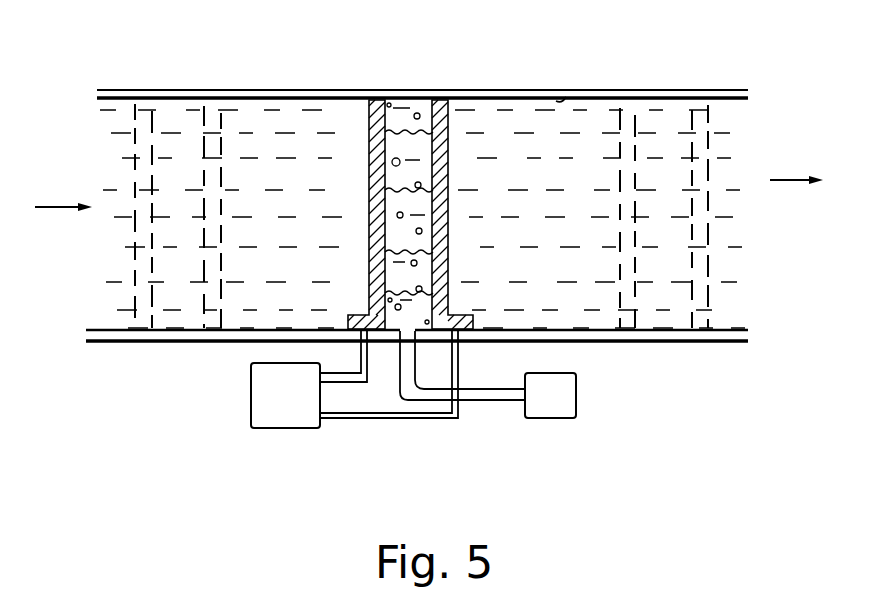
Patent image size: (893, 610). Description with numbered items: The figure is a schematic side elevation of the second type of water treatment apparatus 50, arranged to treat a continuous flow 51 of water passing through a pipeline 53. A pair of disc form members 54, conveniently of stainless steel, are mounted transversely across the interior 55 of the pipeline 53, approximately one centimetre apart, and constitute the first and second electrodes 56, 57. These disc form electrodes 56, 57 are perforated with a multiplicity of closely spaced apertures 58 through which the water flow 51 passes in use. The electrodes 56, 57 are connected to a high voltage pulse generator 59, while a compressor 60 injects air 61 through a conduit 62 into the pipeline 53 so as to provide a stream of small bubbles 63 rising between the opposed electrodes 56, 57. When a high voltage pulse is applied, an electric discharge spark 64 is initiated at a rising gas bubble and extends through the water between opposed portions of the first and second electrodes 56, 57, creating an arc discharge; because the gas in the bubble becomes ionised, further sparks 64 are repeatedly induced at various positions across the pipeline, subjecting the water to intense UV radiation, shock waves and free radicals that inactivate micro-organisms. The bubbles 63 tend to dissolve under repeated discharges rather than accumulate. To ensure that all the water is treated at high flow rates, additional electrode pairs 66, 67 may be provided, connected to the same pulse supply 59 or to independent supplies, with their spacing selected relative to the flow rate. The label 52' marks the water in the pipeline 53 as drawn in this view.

The apparatus 50 is at (432, 447).
The continuous flow 51 is at (788, 177).
The pipe wall 52' is at (447, 83).
The pipeline 53 is at (475, 97).
The disc form members 54 is at (440, 100).
The interior 55 is at (566, 97).
The first electrode 56 is at (370, 128).
The second electrode 57 is at (447, 147).
The apertures 58 is at (370, 160).
The high voltage pulse generator 59 is at (288, 430).
The compressor 60 is at (576, 397).
The air 61 is at (398, 232).
The conduit 62 is at (488, 400).
The bubbles 63 is at (395, 300).
The electric discharge spark 64 is at (447, 243).
The additional electrode pair 66 is at (713, 292).
The additional electrode pair 67 is at (130, 148).